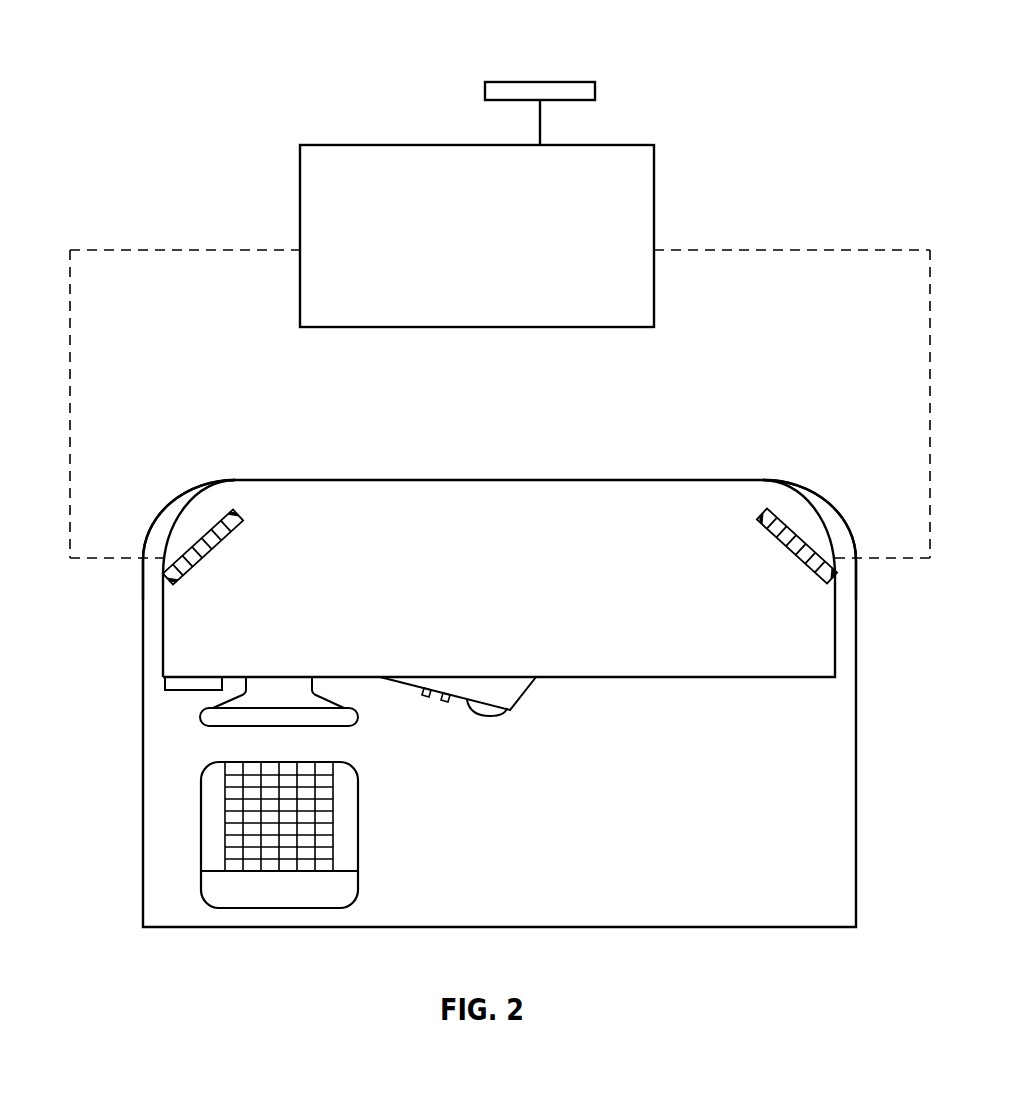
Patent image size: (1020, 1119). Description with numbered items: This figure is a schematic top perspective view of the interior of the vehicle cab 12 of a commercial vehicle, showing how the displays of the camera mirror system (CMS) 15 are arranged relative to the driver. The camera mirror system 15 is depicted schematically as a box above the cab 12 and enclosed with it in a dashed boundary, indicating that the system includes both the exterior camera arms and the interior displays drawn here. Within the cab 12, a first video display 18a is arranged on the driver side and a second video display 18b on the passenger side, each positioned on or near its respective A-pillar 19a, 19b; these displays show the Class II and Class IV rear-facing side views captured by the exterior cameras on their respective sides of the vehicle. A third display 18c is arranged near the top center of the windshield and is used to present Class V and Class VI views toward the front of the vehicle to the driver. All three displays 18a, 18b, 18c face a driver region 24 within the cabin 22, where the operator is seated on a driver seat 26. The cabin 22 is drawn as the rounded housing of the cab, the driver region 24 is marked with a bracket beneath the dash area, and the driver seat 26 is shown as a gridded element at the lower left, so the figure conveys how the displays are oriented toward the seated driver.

The vehicle cab 12 is at (510, 654).
The camera mirror system 15 is at (655, 182).
The first video display 18a is at (207, 533).
The second video display 18b is at (796, 525).
The third display 18c is at (540, 80).
The A-pillar 19a is at (157, 532).
The A-pillar 19b is at (836, 524).
The cabin 22 is at (757, 868).
The driver region 24 is at (462, 713).
The driver seat 26 is at (343, 826).